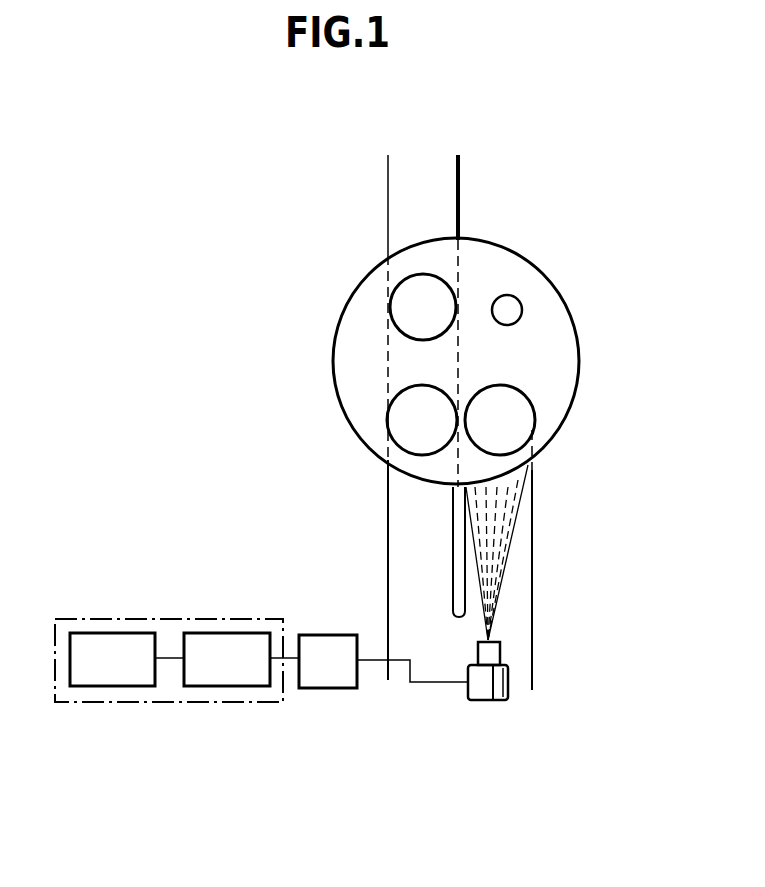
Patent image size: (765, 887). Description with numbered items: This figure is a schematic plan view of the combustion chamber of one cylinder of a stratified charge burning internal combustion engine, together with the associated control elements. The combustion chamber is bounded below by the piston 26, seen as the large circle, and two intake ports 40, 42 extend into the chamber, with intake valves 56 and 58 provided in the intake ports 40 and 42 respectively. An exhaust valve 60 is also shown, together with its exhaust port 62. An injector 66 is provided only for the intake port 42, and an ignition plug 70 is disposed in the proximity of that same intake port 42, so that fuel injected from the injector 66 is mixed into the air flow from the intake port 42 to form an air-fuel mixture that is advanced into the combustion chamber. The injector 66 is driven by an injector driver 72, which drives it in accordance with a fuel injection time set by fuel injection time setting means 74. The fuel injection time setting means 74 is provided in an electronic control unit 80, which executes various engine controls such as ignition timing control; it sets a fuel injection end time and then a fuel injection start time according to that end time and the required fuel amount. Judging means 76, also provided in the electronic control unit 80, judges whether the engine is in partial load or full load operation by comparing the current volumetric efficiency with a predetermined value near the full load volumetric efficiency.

The piston 26 is at (504, 364).
The intake port 40 is at (410, 523).
The intake port 42 is at (507, 545).
The intake valve 56 is at (408, 413).
The intake valve 58 is at (520, 423).
The exhaust valve 60 is at (409, 304).
The exhaust port 62 is at (447, 200).
The injector 66 is at (510, 678).
The ignition plug 70 is at (516, 302).
The injector driver 72 is at (332, 682).
The fuel injection time setting means 74 is at (220, 680).
The judging means 76 is at (117, 680).
The electronic control unit 80 is at (125, 619).